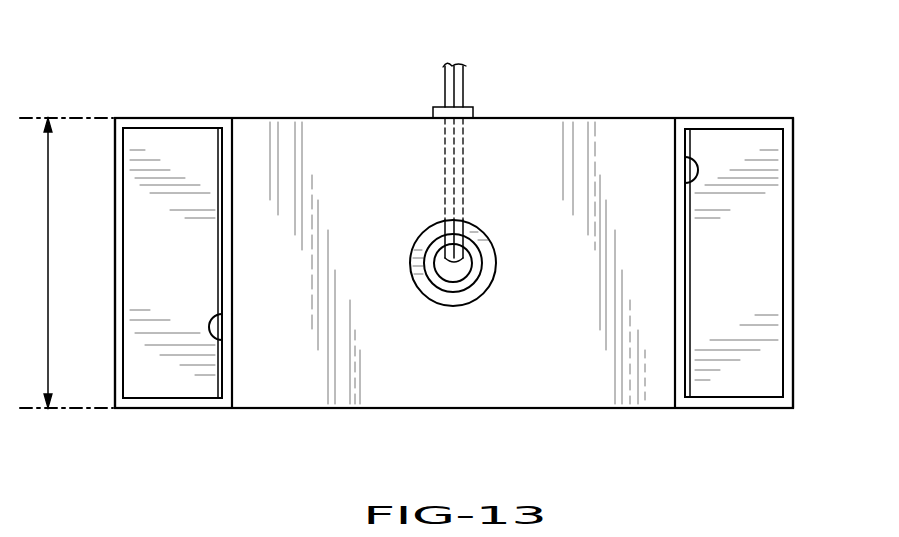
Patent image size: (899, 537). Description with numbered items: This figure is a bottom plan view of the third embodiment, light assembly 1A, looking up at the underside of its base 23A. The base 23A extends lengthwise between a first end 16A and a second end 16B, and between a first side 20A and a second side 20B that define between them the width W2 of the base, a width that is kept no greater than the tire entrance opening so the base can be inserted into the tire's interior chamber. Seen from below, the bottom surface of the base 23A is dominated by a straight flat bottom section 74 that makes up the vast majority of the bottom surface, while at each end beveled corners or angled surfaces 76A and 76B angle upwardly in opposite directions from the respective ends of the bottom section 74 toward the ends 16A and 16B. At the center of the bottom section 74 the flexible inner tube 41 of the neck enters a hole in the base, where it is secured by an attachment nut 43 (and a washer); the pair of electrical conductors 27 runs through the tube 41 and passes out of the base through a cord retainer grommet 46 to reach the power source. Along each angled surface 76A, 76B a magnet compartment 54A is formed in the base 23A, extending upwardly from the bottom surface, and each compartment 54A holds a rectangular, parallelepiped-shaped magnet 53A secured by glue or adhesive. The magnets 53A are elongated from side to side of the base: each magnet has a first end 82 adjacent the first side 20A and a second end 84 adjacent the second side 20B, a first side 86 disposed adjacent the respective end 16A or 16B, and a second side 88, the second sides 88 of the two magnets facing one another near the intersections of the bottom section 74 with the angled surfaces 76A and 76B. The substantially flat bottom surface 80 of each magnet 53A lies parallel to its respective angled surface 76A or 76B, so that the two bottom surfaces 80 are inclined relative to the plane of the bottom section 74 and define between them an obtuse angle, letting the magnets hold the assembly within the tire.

The light assembly 1A is at (683, 72).
The base 23A is at (311, 112).
The first side 20A is at (612, 118).
The second side 20B is at (512, 410).
The bottom section 74 is at (420, 375).
The first end 82 is at (158, 128).
The first end 16A is at (115, 188).
The second end 16B is at (793, 170).
The bottom surface 80 is at (148, 223).
The first side 86 is at (123, 320).
The magnet 53A is at (200, 272).
The magnet compartment 54A is at (222, 340).
The second end 84 is at (147, 398).
The angled surface 76A is at (192, 404).
The angled surface 76B is at (712, 405).
The second side 88 is at (232, 368).
The cord retainer grommet 46 is at (444, 106).
The electrical conductors 27 is at (463, 79).
The attachment nut 43 is at (475, 288).
The inner tube 41 is at (435, 258).
The width W2 is at (66, 263).